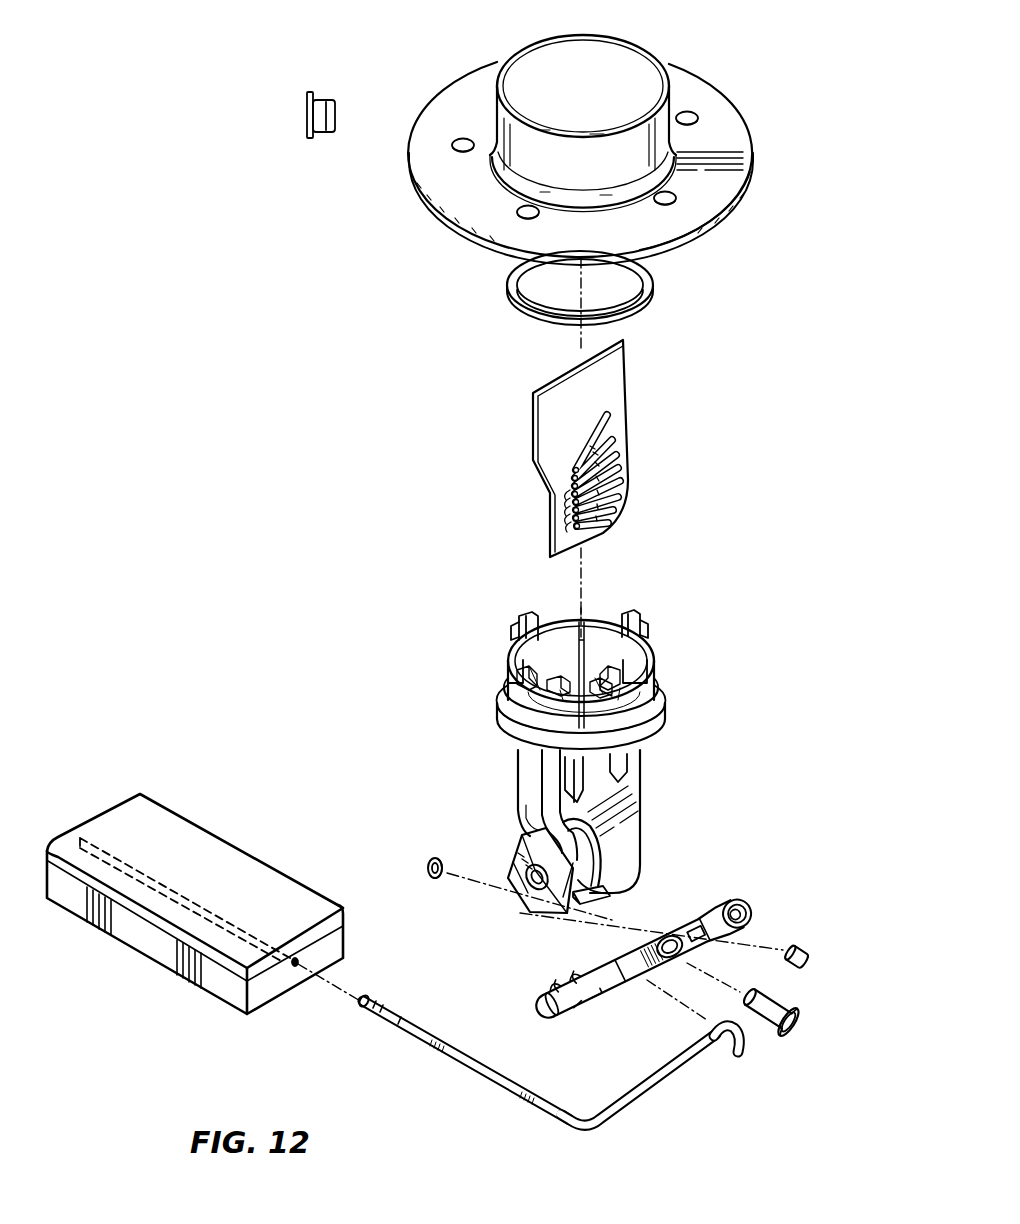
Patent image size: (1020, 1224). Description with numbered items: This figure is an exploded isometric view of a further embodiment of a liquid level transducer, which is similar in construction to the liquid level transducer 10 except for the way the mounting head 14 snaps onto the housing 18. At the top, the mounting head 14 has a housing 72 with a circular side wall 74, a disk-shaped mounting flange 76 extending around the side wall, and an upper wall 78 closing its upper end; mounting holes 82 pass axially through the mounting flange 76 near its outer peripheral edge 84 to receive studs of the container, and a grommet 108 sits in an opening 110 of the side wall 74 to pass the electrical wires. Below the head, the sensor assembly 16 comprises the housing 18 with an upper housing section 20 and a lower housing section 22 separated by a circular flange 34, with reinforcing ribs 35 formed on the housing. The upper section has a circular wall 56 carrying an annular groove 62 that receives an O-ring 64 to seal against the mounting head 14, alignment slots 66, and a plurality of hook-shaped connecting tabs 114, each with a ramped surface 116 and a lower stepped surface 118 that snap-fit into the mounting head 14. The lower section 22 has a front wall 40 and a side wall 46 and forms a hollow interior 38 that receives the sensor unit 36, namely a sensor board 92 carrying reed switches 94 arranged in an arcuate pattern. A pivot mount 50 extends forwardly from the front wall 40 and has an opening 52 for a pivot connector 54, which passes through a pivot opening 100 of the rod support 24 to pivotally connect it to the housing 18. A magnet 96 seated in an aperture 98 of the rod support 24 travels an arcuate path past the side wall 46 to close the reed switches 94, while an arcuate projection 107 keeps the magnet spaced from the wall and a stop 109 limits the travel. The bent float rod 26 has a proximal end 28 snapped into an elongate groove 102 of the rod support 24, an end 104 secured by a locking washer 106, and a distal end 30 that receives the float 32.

The liquid level transducer 10 is at (265, 260).
The mounting head 14 is at (692, 64).
The sensor assembly 16 is at (430, 505).
The housing 18 is at (648, 815).
The upper housing section 20 is at (655, 670).
The lower housing section 22 is at (623, 878).
The rod support 24 is at (660, 980).
The float rod 26 is at (627, 1122).
The proximal end 28 is at (722, 1066).
The distal end 30 is at (470, 1077).
The float 32 is at (213, 830).
The circular flange 34 is at (667, 720).
The reinforcing ribs 35 is at (573, 775).
The sensor unit 36 is at (642, 387).
The hollow interior 38 is at (597, 640).
The front wall 40 is at (527, 802).
The side wall 46 is at (633, 772).
The pivot mount 50 is at (527, 850).
The opening 52 is at (527, 888).
The pivot connector 54 is at (783, 1007).
The circular wall 56 is at (517, 690).
The annular groove 62 is at (657, 693).
The O-ring 64 is at (533, 308).
The alignment slot 66 is at (578, 622).
The housing 72 is at (513, 55).
The circular side wall 74 is at (533, 160).
The mounting flange 76 is at (730, 123).
The upper wall 78 is at (620, 53).
The mounting holes 82 is at (690, 110).
The outer peripheral edge 84 is at (713, 218).
The sensor board 92 is at (553, 380).
The reed switches 94 is at (587, 443).
The magnet 96 is at (805, 950).
The aperture 98 is at (750, 918).
The pivot opening 100 is at (687, 957).
The elongate groove 102 is at (580, 1023).
The end of the float rod 104 is at (708, 1047).
The locking washer 106 is at (430, 858).
The arcuate projection 107 is at (597, 853).
The grommet 108 is at (305, 118).
The stop 109 is at (580, 925).
The opening 110 is at (495, 112).
The hook-shaped connecting tabs 114 is at (530, 615).
The ramped surface 116 is at (520, 623).
The lower stepped surface 118 is at (643, 627).